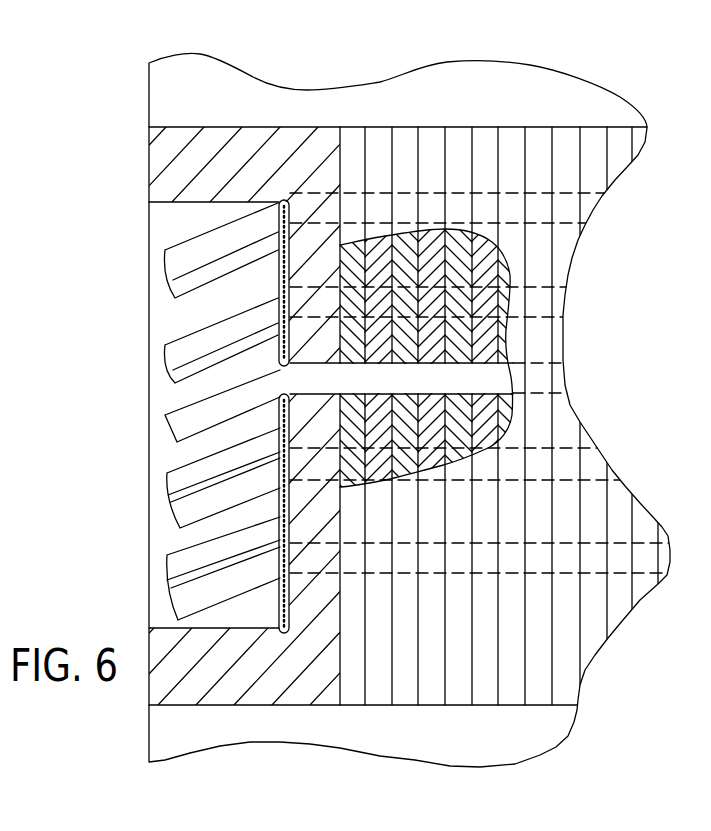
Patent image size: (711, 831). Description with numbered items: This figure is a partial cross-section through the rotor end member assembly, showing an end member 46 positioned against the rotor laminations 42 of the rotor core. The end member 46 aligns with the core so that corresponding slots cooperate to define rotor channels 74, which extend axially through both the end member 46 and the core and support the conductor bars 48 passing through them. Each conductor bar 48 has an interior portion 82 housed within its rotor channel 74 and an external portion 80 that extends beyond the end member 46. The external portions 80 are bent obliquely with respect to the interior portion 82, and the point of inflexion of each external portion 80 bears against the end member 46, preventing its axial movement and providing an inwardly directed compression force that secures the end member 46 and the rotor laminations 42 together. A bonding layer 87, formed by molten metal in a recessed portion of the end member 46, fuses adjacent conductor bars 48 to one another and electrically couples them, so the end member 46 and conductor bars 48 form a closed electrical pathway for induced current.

The rotor laminations 42 is at (430, 695).
The end member 46 is at (250, 692).
The conductor bars 48 is at (180, 511).
The rotor channels 74 is at (567, 187).
The external portion 80 is at (163, 353).
The interior portion 82 is at (407, 203).
The bonding layer 87 is at (278, 245).